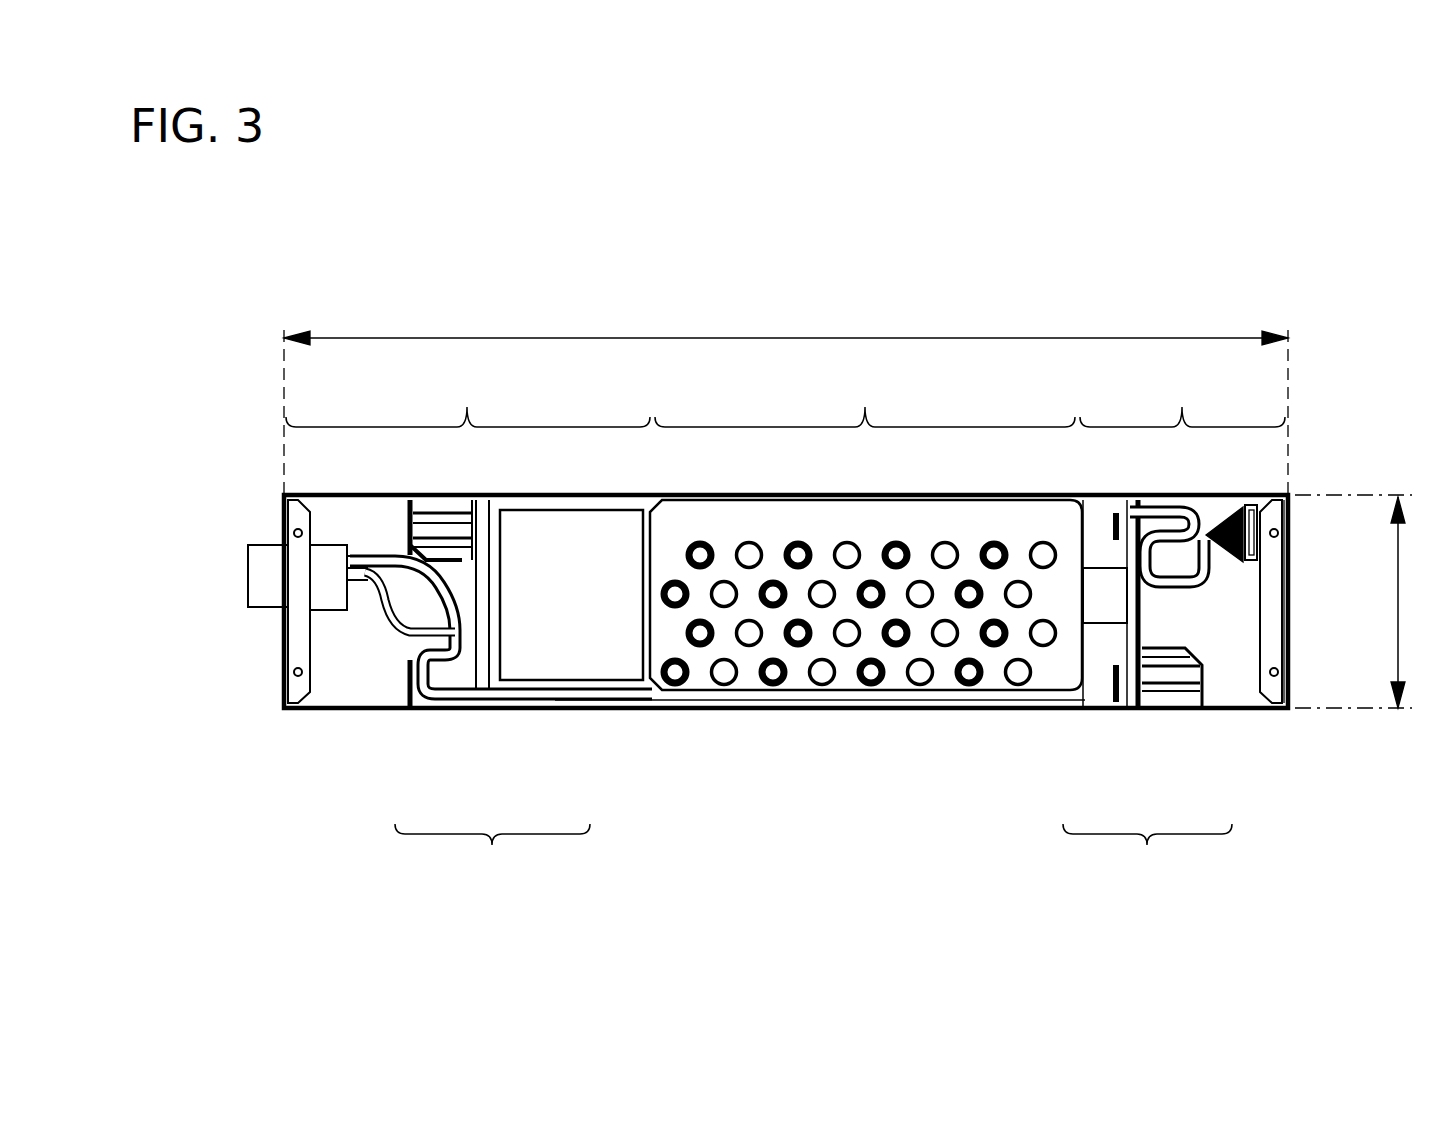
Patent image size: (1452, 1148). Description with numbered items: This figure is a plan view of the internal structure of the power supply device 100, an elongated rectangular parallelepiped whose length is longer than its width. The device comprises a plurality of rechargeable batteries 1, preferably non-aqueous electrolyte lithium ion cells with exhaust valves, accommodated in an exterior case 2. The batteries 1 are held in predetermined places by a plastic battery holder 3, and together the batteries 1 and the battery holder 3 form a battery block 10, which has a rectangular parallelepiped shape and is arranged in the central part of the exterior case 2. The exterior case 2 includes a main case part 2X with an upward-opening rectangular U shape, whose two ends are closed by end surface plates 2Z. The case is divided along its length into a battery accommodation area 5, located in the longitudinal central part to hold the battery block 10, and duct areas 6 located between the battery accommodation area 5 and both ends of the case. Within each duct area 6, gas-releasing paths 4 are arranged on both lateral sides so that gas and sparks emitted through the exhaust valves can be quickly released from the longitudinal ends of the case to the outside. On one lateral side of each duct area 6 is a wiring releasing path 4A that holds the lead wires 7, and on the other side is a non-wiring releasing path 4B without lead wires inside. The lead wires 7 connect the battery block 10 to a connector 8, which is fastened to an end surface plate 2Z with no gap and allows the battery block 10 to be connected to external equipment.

The power supply device 100 is at (1236, 280).
The rechargeable battery 1 is at (772, 680).
The exterior case 2 is at (678, 748).
The main case part 2X is at (722, 712).
The end surface plate 2Z is at (282, 640).
The battery holder 3 is at (897, 665).
The gas-releasing path 4 is at (813, 854).
The wiring releasing path 4A is at (412, 714).
The non-wiring releasing path 4B is at (470, 552).
The battery accommodation area 5 is at (865, 396).
The duct area 6 is at (785, 396).
The lead wire 7 is at (437, 582).
The connector 8 is at (318, 573).
The battery block 10 is at (986, 708).